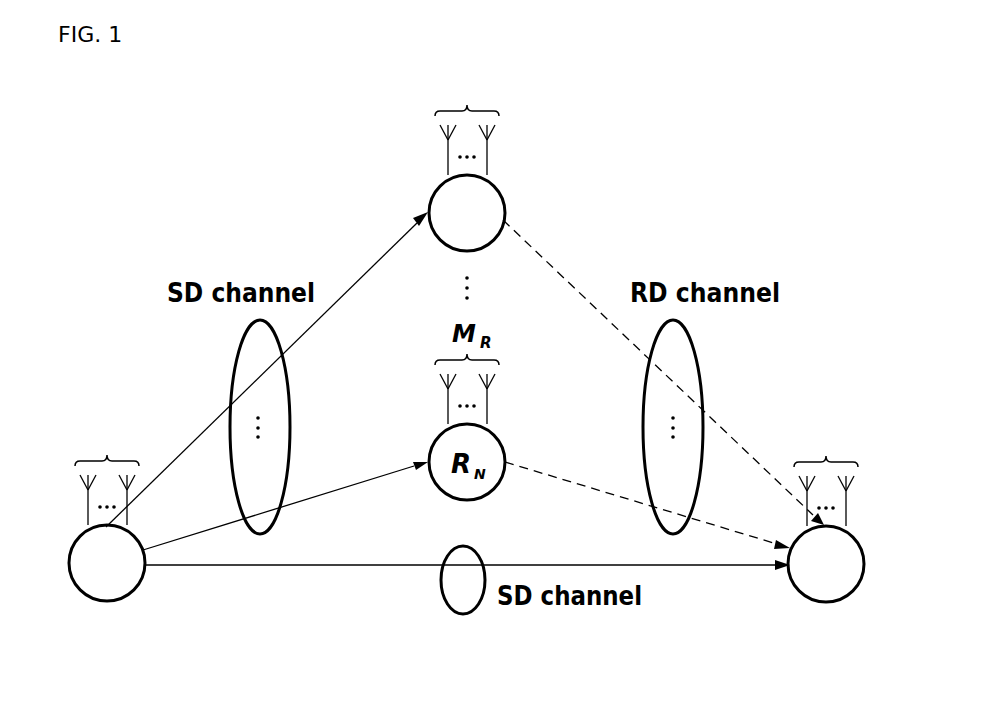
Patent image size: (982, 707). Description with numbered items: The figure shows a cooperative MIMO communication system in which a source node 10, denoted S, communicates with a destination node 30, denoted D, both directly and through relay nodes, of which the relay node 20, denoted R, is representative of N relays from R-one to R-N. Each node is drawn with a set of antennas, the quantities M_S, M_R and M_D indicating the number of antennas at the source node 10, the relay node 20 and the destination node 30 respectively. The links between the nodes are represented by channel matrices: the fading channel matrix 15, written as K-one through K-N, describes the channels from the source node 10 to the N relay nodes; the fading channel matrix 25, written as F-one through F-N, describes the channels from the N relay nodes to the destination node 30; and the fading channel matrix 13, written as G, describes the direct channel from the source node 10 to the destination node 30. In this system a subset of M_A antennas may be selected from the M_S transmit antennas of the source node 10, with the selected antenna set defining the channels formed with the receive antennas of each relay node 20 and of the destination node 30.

The source node 10 is at (108, 601).
The relay node 20 is at (497, 188).
The destination node 30 is at (802, 595).
The fading channel matrix 15 is at (288, 417).
The fading channel matrix 25 is at (700, 377).
The fading channel matrix 13 is at (462, 615).